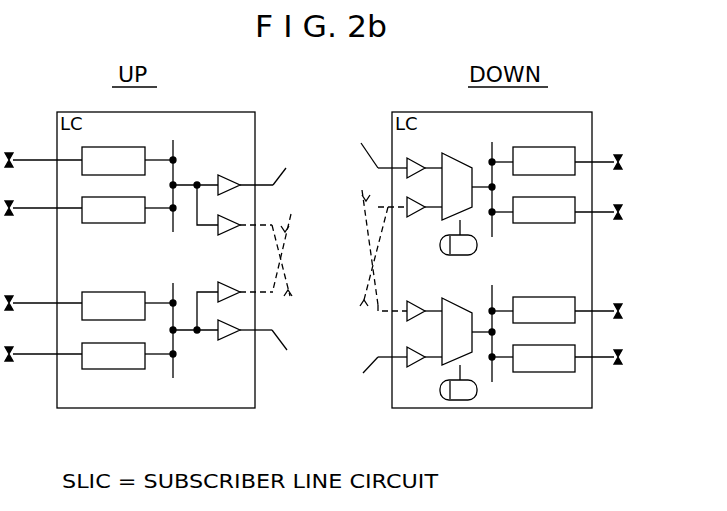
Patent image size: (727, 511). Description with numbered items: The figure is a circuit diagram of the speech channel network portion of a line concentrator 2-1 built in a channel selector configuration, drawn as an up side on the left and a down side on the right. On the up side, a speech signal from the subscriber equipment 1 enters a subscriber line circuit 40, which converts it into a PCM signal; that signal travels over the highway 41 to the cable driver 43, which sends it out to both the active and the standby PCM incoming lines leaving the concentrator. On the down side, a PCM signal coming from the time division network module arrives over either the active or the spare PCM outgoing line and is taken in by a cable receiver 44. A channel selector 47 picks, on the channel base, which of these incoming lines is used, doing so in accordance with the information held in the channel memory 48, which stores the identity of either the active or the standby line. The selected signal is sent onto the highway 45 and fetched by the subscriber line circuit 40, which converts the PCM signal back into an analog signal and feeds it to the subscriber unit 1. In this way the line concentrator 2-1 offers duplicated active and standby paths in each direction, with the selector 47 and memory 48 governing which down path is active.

The subscriber equipment 1 is at (328, 240).
The line concentrator 2-1 is at (152, 408).
The subscriber line circuit 40 is at (328, 243).
The highway 41 is at (115, 247).
The cable driver 43 is at (232, 239).
The cable receiver 44 is at (422, 156).
The highway 45 is at (550, 247).
The channel selector 47 is at (458, 241).
The channel memory 48 is at (436, 312).